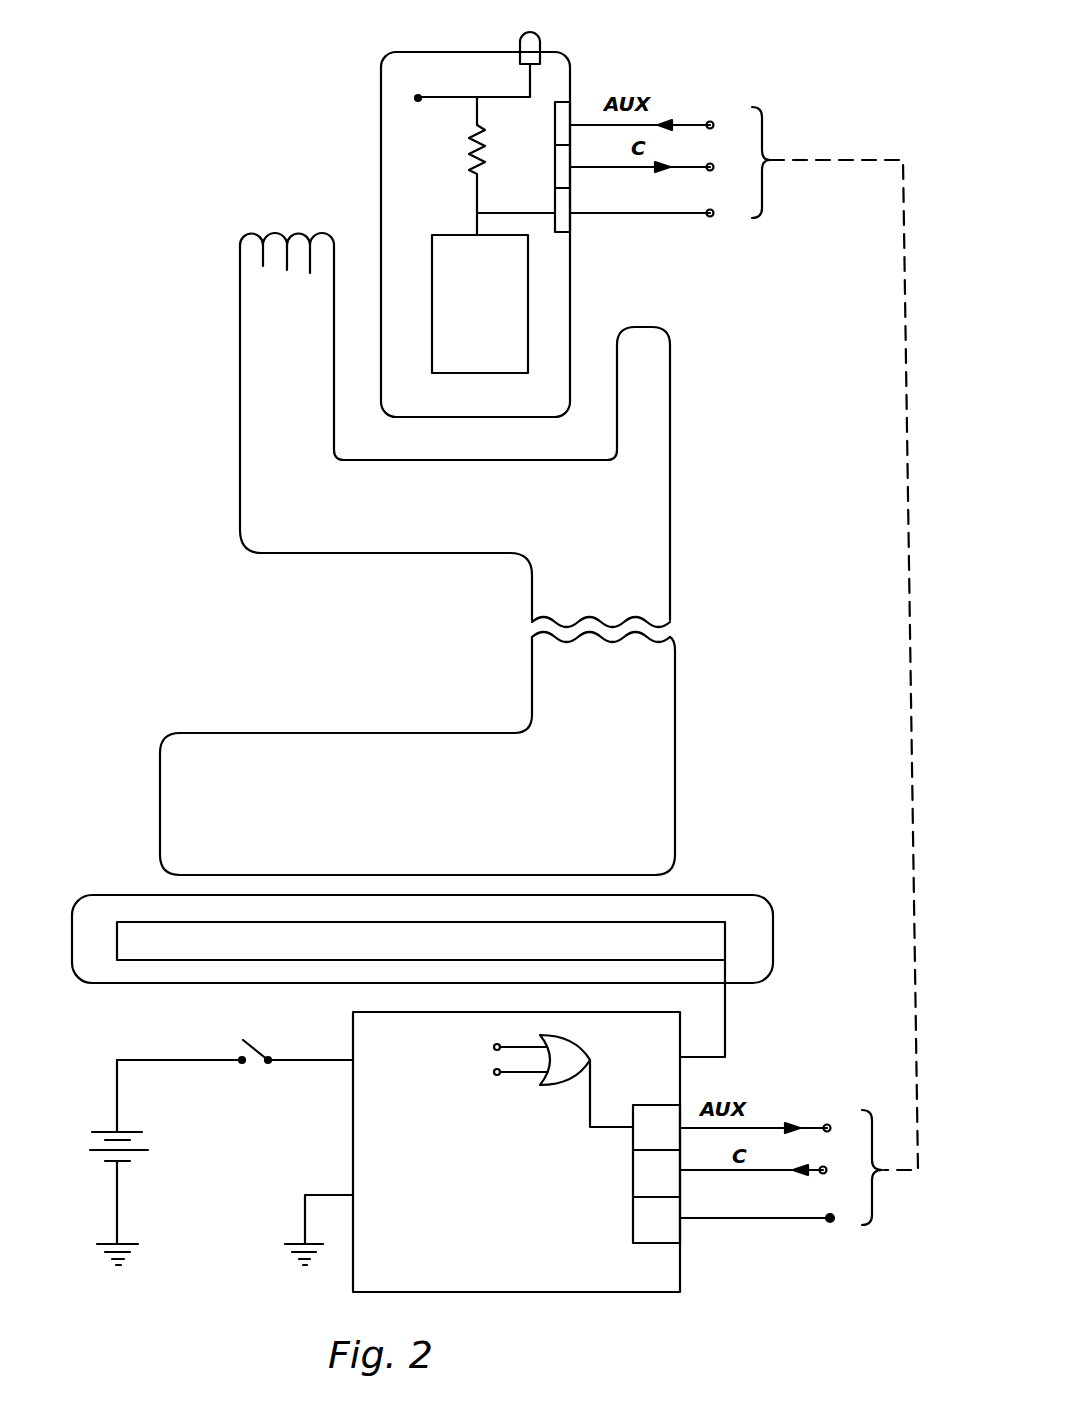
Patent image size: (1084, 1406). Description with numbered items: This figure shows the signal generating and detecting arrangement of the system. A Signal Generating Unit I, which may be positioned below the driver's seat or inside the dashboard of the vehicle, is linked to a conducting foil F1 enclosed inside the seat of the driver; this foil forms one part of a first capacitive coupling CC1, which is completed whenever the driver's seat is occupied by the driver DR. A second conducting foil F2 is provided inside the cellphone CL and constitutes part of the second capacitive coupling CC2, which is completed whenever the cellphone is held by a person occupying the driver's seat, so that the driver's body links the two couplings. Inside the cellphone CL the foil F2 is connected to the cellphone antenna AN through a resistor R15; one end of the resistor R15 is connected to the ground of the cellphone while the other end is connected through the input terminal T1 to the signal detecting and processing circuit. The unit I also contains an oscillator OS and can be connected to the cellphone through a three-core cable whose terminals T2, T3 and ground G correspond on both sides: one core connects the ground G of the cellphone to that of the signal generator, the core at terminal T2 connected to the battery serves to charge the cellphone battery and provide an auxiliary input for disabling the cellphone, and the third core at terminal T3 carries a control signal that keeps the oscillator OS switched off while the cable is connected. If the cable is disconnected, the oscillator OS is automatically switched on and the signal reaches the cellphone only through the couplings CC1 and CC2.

The cellphone CL is at (445, 234).
The cellphone antenna AN is at (494, 51).
The input terminal T1 is at (411, 85).
The resistor R15 is at (485, 166).
The terminal T2 is at (768, 611).
The terminal T3 is at (781, 660).
The ground G is at (774, 731).
The conducting foil F2 is at (480, 304).
The second capacitive coupling CC2 is at (486, 430).
The driver DR is at (442, 753).
The first capacitive coupling CC1 is at (427, 920).
The conducting foil F1 is at (421, 989).
The Signal Generating Unit I is at (516, 1152).
The oscillator OS is at (235, 1088).